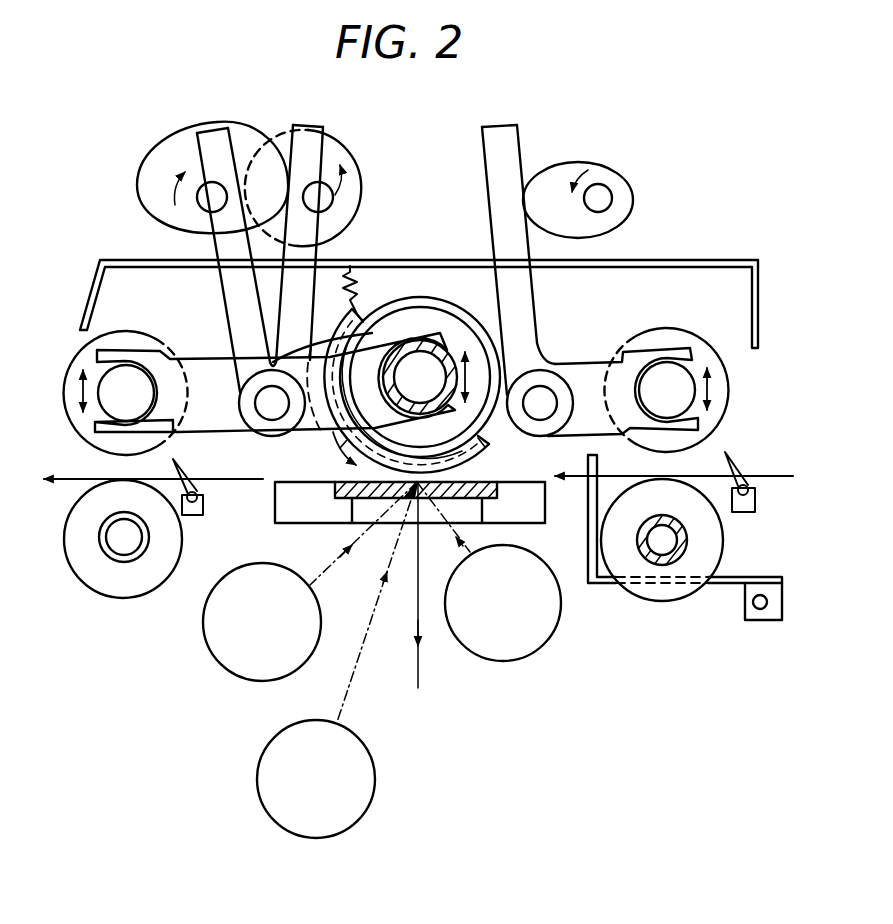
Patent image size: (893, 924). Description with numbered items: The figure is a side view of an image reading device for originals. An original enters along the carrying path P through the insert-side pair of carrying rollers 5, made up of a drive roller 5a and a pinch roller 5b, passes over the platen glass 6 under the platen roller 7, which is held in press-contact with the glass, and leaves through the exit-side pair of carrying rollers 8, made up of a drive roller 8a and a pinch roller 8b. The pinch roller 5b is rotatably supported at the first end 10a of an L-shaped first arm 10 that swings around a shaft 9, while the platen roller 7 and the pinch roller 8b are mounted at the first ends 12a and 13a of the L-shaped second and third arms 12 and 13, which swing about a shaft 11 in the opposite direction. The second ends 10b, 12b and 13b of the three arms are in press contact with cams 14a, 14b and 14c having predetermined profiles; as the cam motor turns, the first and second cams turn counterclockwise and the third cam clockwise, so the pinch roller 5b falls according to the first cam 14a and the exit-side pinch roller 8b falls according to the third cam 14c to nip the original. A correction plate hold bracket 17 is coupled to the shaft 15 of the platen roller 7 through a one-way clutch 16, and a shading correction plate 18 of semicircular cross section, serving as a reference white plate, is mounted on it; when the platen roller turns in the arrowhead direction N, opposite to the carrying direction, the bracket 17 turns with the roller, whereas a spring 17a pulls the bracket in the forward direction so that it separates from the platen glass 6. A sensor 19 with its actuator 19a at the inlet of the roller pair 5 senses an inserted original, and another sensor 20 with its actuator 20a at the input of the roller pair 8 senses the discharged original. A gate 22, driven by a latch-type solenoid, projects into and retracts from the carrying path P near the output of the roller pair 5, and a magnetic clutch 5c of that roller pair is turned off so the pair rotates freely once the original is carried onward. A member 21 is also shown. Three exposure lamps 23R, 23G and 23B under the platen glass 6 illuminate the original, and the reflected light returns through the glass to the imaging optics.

The pair of carrying rollers 5 is at (700, 336).
The drive roller 5a is at (712, 541).
The pinch roller 5b is at (720, 377).
The magnetic clutch 5c is at (675, 565).
The platen glass 6 is at (365, 505).
The platen roller 7 is at (478, 337).
The pair of carrying rollers 8 is at (60, 510).
The drive roller 8a is at (95, 578).
The pinch roller 8b is at (85, 355).
The shaft 9 is at (542, 398).
The first arm 10 is at (480, 168).
The first end of first arm 10a is at (650, 355).
The second end of first arm 10b is at (512, 143).
The shaft 11 is at (273, 398).
The second arm 12 is at (220, 292).
The first end of second arm 12a is at (258, 352).
The second end of second arm 12b is at (213, 142).
The third arm 13 is at (334, 247).
The first end of third arm 13a is at (137, 360).
The second end of third arm 13b is at (308, 142).
The first cam 14a is at (615, 180).
The second cam 14b is at (338, 158).
The third cam 14c is at (150, 168).
The shaft of platen roller 15 is at (420, 377).
The one-way clutch 16 is at (448, 352).
The correction plate hold bracket 17 is at (465, 413).
The spring 17a is at (362, 290).
The shading correction plate 18 is at (345, 442).
The sensor 19 is at (748, 513).
The actuator 19a is at (730, 462).
The sensor 20 is at (197, 515).
The actuator 20a is at (183, 474).
The mounting block 21 is at (757, 605).
The gate 22 is at (588, 508).
The exposure lamp 23R is at (228, 648).
The exposure lamp 23G is at (275, 762).
The exposure lamp 23B is at (545, 640).
The arrowhead direction N is at (357, 455).
The original carrying path P is at (75, 478).